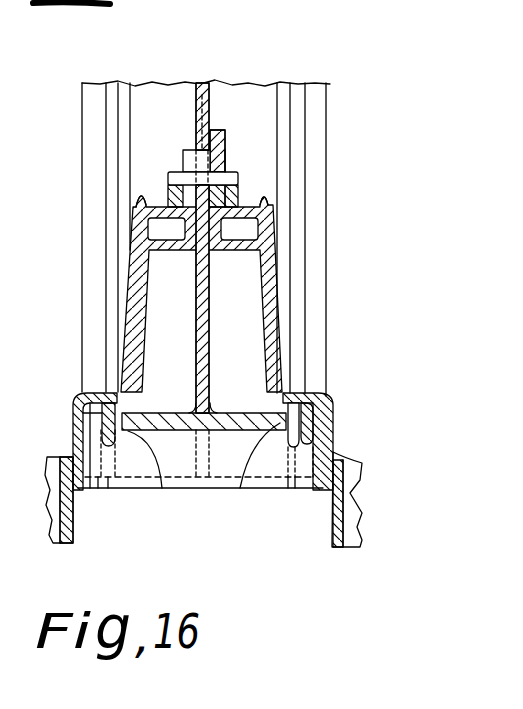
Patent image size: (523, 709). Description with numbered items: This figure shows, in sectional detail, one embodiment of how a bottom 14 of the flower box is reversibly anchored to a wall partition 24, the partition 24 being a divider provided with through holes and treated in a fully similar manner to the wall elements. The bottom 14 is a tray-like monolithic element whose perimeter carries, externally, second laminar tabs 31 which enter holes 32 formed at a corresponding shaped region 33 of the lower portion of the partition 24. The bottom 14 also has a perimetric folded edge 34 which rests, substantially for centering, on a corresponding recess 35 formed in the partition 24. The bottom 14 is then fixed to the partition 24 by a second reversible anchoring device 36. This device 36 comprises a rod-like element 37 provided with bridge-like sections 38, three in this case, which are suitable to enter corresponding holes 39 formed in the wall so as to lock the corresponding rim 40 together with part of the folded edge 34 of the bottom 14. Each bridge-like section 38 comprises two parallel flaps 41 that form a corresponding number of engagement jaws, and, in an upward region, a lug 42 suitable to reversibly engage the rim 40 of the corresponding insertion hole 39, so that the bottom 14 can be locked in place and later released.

The bottom 14 is at (130, 302).
The wall partition 24 is at (326, 163).
The second laminar tab 31 is at (162, 490).
The hole 32 is at (115, 395).
The shaped region 33 is at (313, 424).
The perimetric folded edge 34 is at (137, 198).
The recess 35 is at (170, 315).
The second reversible anchoring device 36 is at (240, 103).
The rod-like element 37 is at (223, 122).
The bridge-like section 38 is at (232, 157).
The hole 39 is at (195, 150).
The rim 40 is at (175, 175).
The parallel flap 41 is at (166, 192).
The lug 42 is at (178, 170).